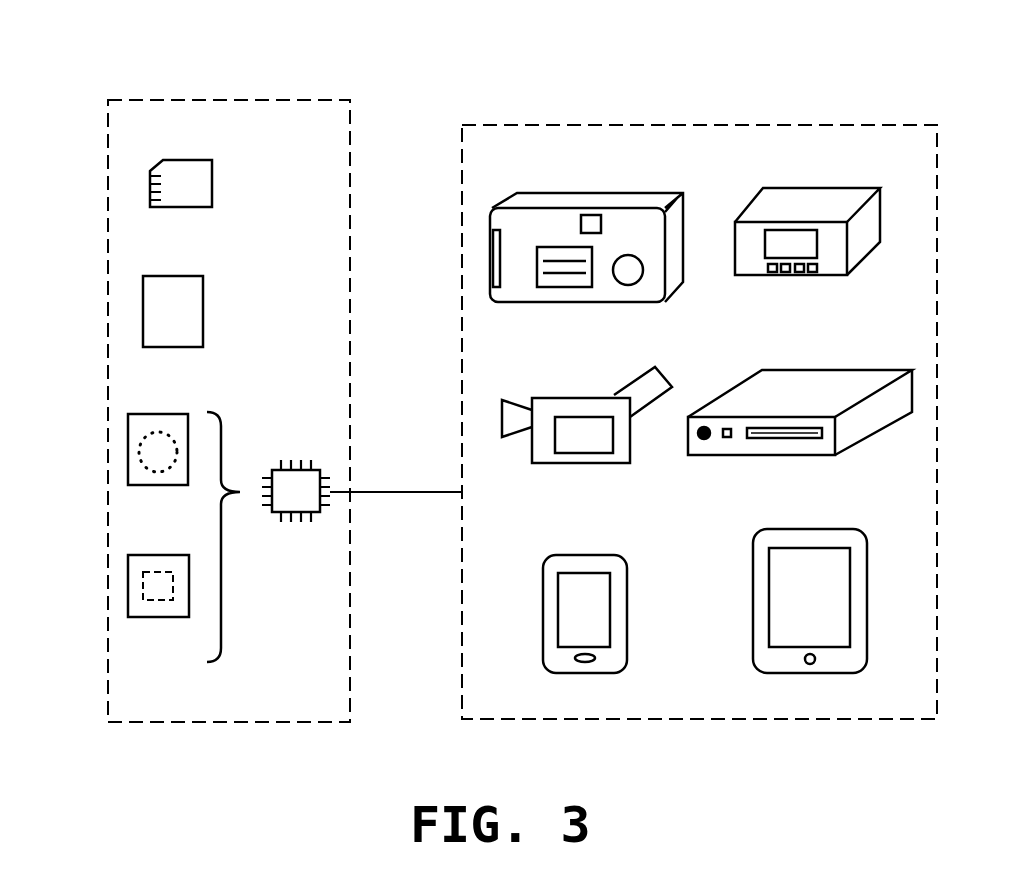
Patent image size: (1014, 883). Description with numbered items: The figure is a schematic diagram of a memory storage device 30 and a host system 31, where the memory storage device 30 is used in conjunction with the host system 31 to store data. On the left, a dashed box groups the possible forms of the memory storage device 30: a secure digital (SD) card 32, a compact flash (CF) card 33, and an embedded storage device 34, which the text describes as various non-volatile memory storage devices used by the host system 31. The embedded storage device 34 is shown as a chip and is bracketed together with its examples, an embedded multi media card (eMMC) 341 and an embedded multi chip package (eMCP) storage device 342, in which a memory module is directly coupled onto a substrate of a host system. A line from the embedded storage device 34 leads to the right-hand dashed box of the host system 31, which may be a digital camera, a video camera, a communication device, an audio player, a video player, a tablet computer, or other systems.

The memory storage device 30 is at (212, 100).
The host system 31 is at (622, 125).
The secure digital (SD) card 32 is at (150, 190).
The compact flash (CF) card 33 is at (143, 312).
The embedded storage device 34 is at (298, 460).
The embedded multi media card (eMMC) 341 is at (128, 452).
The embedded multi chip package (eMCP) storage device 342 is at (128, 592).